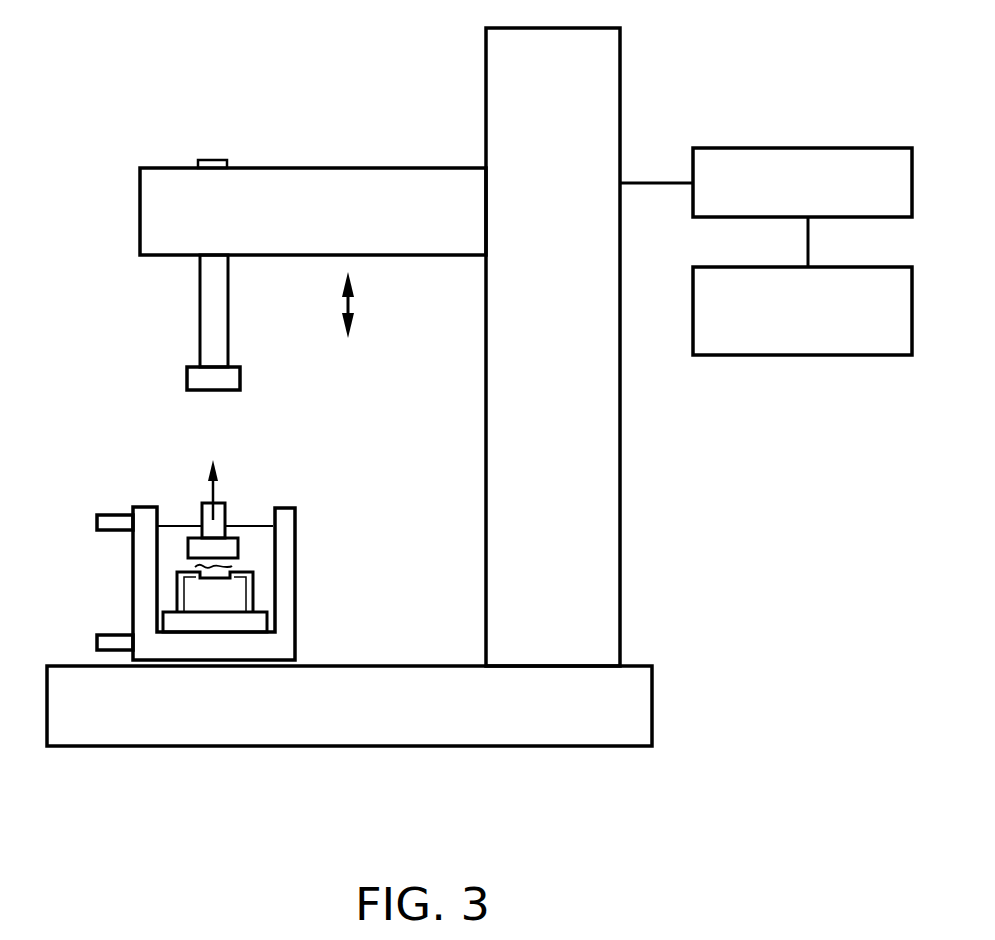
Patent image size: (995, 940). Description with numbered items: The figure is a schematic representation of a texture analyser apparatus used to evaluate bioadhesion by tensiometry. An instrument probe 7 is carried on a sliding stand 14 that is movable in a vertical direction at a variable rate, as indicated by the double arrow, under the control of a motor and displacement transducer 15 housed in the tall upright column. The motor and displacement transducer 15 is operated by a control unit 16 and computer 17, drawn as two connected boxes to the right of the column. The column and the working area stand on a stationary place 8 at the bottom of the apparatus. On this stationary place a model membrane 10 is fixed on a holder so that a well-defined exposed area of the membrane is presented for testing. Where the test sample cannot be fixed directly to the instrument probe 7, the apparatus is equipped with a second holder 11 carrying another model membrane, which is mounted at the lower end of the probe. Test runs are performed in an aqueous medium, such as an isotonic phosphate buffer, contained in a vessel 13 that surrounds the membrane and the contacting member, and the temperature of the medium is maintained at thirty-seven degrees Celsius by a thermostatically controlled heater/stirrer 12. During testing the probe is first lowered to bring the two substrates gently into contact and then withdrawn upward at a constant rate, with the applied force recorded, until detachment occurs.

The instrument probe 7 is at (222, 335).
The stationary place 8 is at (361, 727).
The model membrane 10 is at (205, 567).
The second holder 11 is at (187, 377).
The thermostatically controlled heater/stirrer 12 is at (147, 578).
The vessel 13 is at (262, 540).
The sliding stand 14 is at (232, 237).
The motor and displacement transducer 15 is at (562, 202).
The control unit 16 is at (747, 201).
The control unit and computer 17 is at (747, 333).